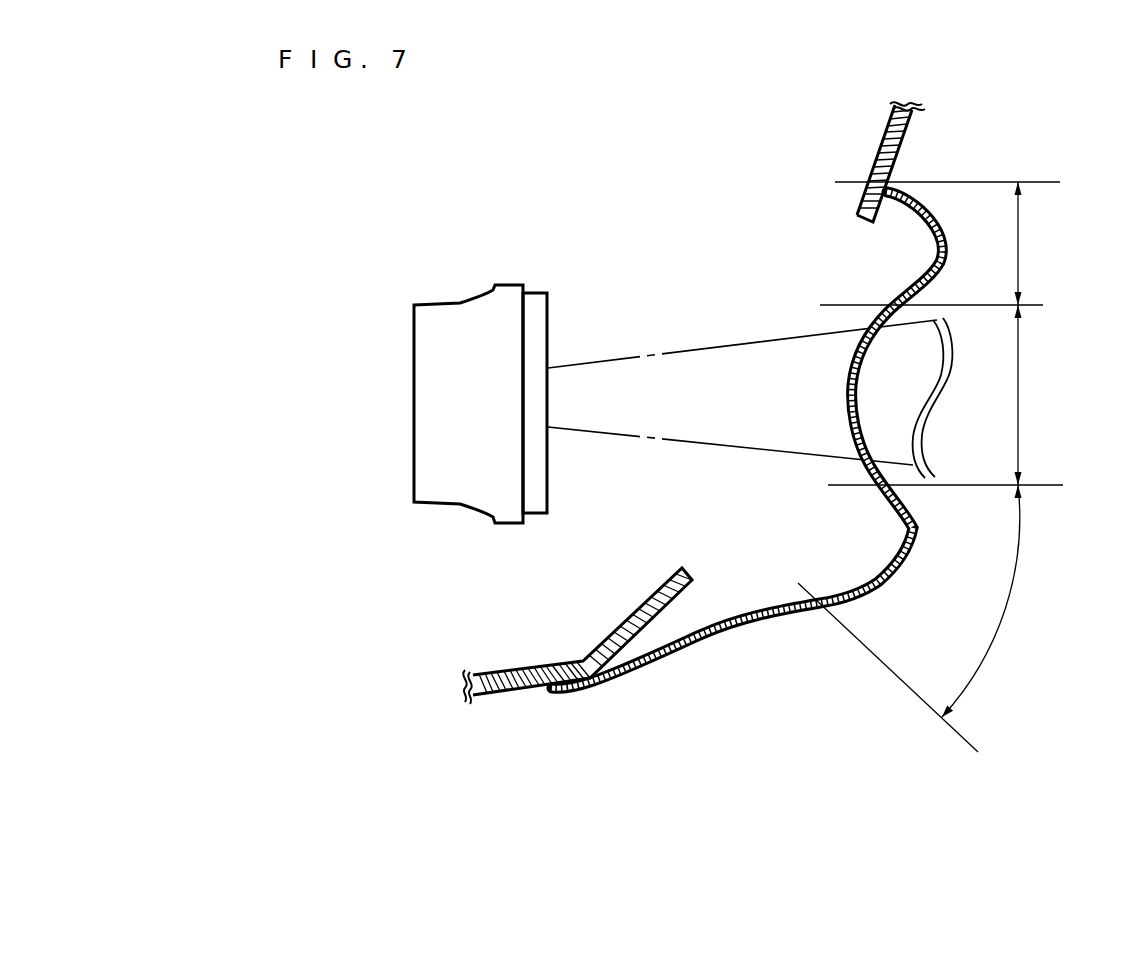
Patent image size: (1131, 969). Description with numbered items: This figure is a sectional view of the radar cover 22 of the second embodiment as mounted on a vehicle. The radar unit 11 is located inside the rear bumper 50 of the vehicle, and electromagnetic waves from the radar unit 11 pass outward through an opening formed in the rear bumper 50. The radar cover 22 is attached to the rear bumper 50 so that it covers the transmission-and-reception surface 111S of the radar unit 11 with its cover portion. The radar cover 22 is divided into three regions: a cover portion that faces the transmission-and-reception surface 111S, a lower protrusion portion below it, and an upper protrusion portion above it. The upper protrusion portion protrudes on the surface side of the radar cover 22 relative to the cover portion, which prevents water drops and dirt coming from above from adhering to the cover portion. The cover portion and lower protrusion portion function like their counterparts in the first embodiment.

The radar unit 11 is at (466, 264).
The transmission-and-reception surface 111S is at (548, 314).
The radar cover 22 is at (780, 613).
The rear bumper 50 is at (903, 147).